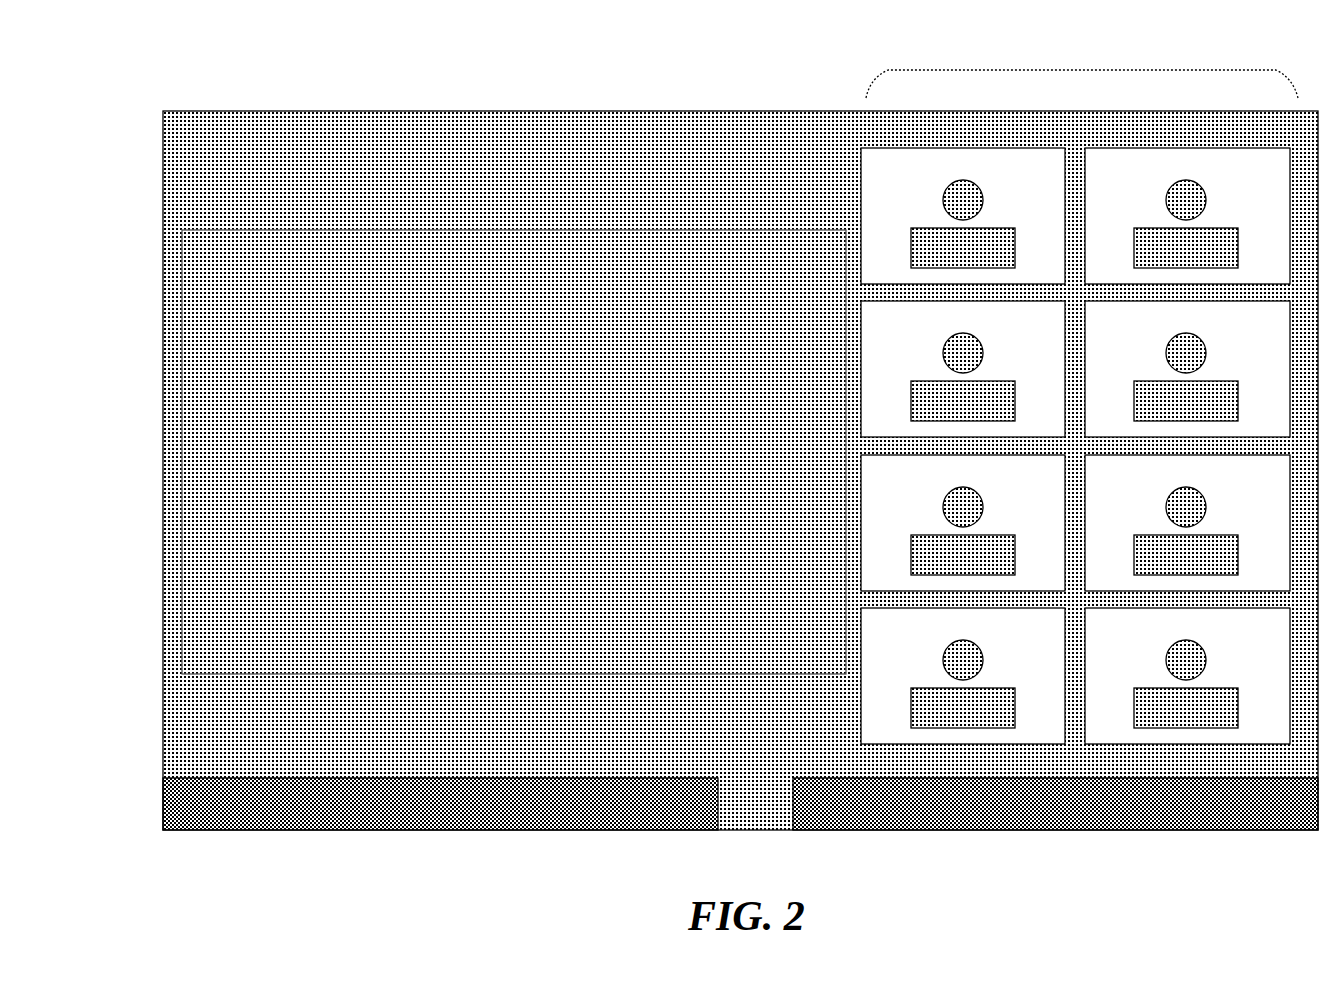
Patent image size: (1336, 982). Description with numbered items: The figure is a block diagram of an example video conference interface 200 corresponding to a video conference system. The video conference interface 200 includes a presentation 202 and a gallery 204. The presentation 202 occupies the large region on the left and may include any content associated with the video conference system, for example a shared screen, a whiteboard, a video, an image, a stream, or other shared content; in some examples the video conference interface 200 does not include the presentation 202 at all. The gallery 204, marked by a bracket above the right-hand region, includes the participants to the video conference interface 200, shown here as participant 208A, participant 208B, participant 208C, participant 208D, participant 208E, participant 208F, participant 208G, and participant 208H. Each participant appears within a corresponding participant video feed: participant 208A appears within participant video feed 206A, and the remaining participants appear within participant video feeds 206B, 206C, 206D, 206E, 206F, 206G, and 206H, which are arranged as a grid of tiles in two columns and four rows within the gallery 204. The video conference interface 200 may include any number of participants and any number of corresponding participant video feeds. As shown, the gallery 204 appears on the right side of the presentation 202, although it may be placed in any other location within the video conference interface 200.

The video conference interface 200 is at (250, 171).
The presentation 202 is at (524, 453).
The gallery 204 is at (1069, 62).
The participant video feed 206A is at (1040, 170).
The participant video feed 206B is at (1264, 170).
The participant video feed 206C is at (1040, 323).
The participant video feed 206D is at (1262, 323).
The participant video feed 206E is at (1041, 477).
The participant video feed 206F is at (1264, 477).
The participant video feed 206G is at (1048, 630).
The participant video feed 206H is at (1262, 630).
The participant 208A is at (981, 251).
The participant 208B is at (1204, 251).
The participant 208C is at (981, 404).
The participant 208D is at (1204, 404).
The participant 208E is at (981, 558).
The participant 208F is at (1203, 558).
The participant 208G is at (982, 711).
The participant 208H is at (1206, 711).